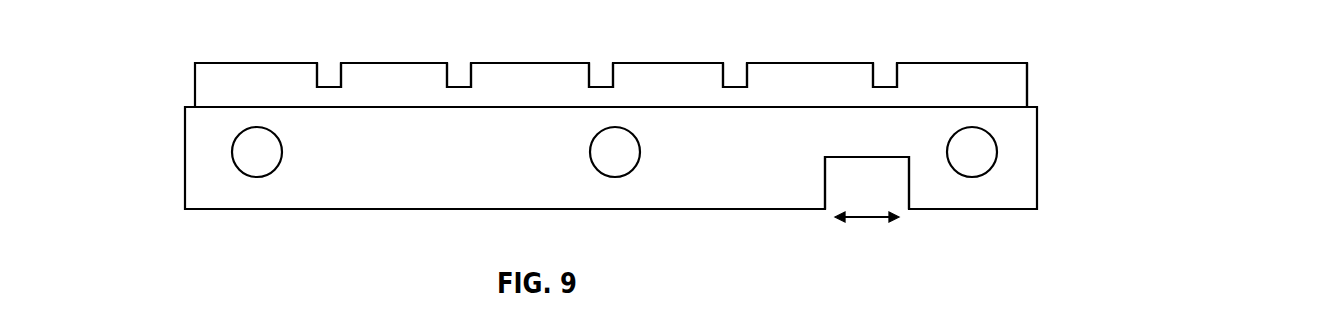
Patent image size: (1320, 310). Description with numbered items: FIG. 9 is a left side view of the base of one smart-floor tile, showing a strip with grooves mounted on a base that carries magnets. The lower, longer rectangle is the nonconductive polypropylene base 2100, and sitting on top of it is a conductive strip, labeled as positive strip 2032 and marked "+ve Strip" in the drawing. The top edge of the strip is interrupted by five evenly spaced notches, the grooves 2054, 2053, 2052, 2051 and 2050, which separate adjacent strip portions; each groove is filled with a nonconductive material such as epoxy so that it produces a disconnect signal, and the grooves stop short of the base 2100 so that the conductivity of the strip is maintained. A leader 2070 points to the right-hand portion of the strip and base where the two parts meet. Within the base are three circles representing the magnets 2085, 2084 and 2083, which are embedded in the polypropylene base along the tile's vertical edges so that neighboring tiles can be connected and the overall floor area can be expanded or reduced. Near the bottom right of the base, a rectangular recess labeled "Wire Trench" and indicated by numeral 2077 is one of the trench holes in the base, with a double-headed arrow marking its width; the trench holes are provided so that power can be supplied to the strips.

The nonconductive base 2100 is at (238, 193).
The positive strip 2032 is at (973, 80).
The base body 2070 is at (1015, 137).
The groove 2054 is at (328, 70).
The groove 2053 is at (458, 70).
The groove 2052 is at (601, 70).
The groove 2051 is at (736, 70).
The groove 2050 is at (884, 70).
The magnet 2085 is at (257, 177).
The magnet 2084 is at (615, 177).
The magnet 2083 is at (972, 177).
The wire trench 2077 is at (856, 179).